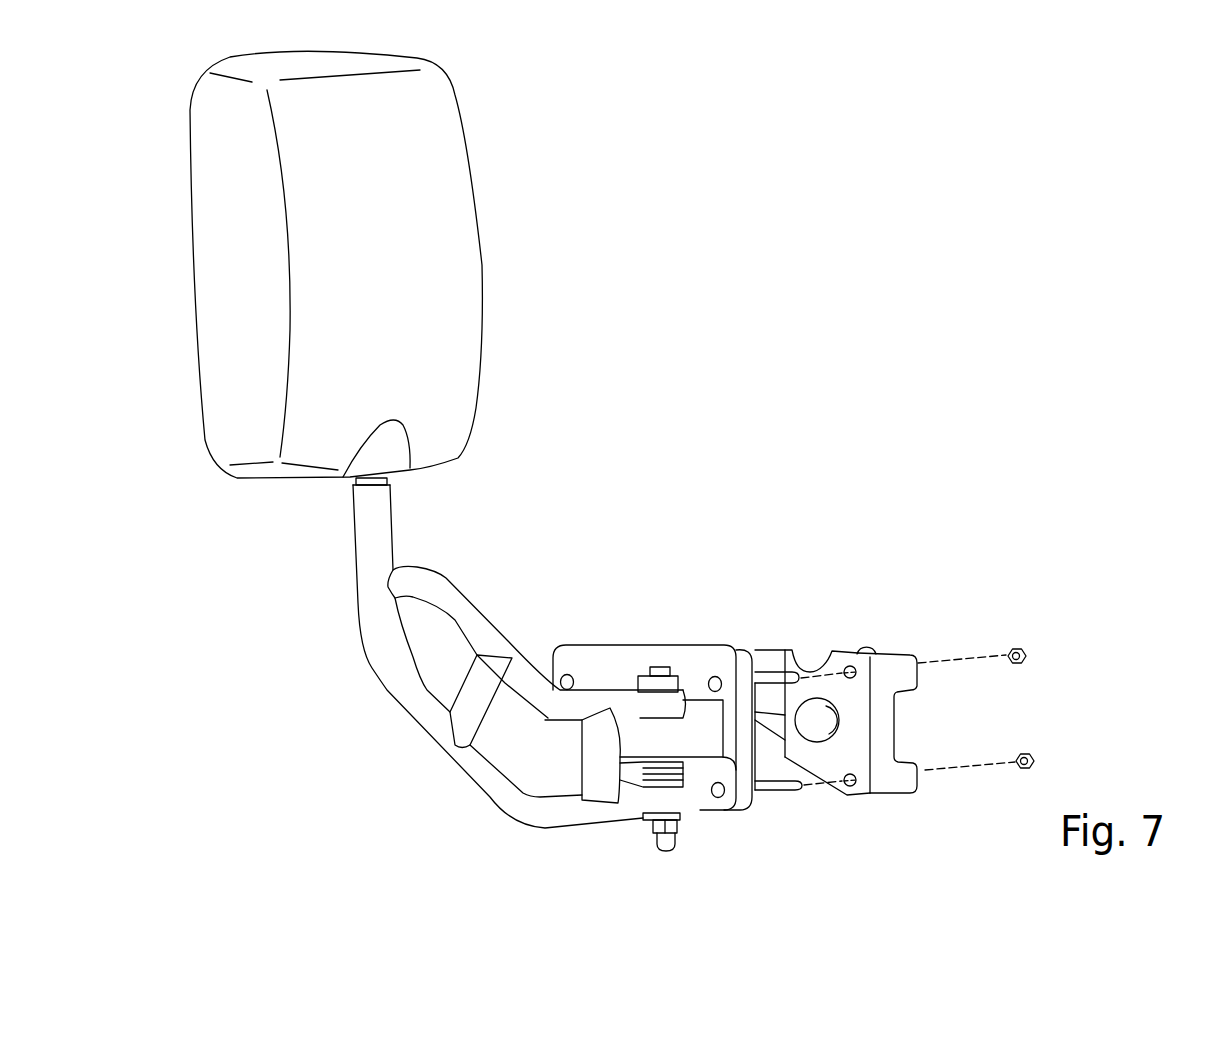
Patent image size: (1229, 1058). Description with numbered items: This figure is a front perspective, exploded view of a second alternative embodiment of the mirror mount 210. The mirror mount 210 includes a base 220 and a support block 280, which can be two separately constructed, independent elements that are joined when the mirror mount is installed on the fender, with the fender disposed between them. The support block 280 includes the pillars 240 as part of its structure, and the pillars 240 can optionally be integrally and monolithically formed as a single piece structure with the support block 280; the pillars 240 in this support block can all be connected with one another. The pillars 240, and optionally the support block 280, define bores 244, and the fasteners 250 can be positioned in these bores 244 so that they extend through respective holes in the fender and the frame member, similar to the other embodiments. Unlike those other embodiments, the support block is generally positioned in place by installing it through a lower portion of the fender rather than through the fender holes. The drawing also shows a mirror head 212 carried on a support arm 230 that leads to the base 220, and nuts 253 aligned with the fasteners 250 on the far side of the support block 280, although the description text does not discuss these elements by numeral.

The mirror mount 210 is at (637, 850).
The mirror head 212 is at (477, 402).
The support arm 230 is at (445, 760).
The base 220 is at (733, 808).
The fasteners 250 is at (773, 677).
The bores 244 is at (850, 787).
The support block 280 is at (862, 633).
The pillars 240 is at (903, 677).
The nuts 253 is at (1028, 647).